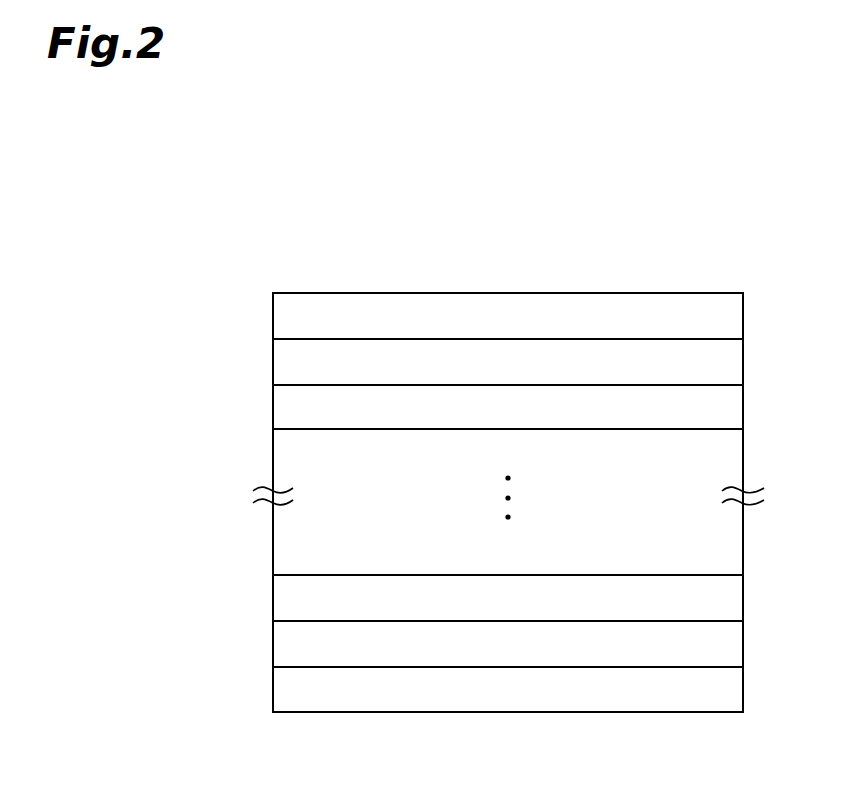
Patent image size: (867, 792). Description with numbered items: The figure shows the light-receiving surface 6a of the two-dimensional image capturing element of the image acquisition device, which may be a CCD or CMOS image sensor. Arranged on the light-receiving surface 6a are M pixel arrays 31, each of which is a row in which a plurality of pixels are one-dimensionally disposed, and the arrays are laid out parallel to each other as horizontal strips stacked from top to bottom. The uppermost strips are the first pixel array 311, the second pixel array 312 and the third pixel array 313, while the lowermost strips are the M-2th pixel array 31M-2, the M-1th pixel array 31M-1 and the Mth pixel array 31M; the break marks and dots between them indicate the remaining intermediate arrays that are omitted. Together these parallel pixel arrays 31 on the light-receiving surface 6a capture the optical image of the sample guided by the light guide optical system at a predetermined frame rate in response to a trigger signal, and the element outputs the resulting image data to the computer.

The light-receiving surface 6a is at (710, 211).
The pixel arrays 31 is at (425, 504).
The first pixel array 311 is at (287, 315).
The second pixel array 312 is at (287, 360).
The third pixel array 313 is at (287, 405).
The M-2th pixel array 31M-2 is at (287, 598).
The M-1th pixel array 31M-1 is at (287, 643).
The Mth pixel array 31M is at (287, 689).